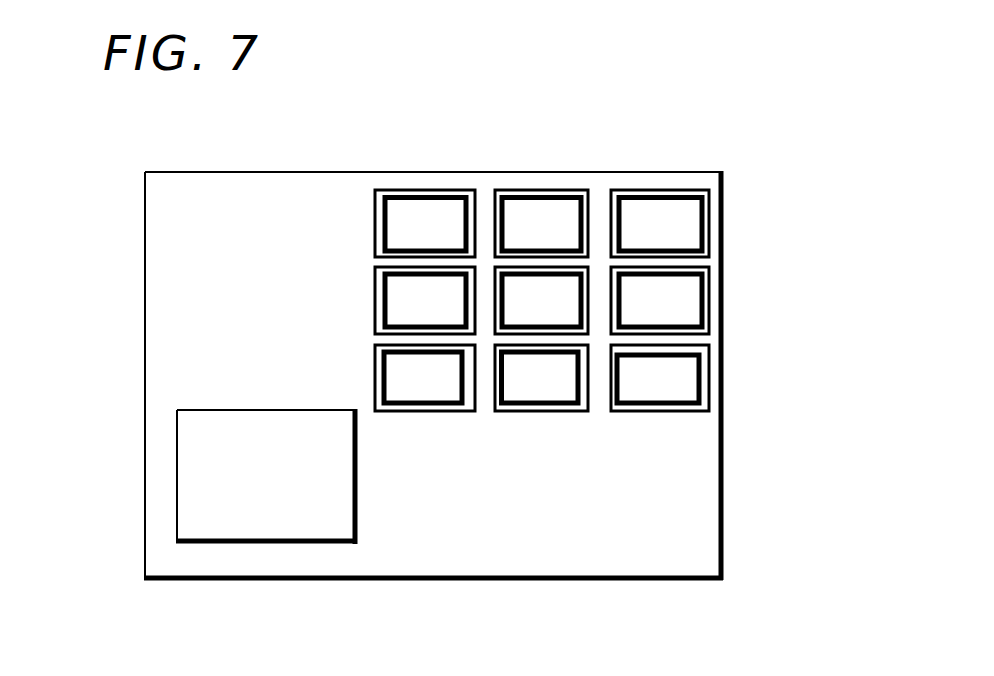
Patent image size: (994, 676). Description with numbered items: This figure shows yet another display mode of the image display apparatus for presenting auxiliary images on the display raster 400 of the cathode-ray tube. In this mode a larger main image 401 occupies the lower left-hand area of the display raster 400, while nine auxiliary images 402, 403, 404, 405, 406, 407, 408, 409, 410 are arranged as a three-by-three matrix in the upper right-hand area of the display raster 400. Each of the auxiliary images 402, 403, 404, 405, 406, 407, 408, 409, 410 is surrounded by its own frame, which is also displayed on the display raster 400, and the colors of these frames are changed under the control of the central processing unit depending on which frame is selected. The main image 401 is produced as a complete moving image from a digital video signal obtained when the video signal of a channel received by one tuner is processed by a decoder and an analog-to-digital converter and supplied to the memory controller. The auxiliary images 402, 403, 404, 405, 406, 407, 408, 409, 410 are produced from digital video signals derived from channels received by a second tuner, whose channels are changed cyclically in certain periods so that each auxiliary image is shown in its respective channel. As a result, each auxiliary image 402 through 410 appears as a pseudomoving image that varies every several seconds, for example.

The display raster 400 is at (660, 581).
The main image 401 is at (177, 468).
The auxiliary image 402 is at (420, 189).
The auxiliary image 403 is at (530, 189).
The auxiliary image 404 is at (660, 189).
The auxiliary image 405 is at (373, 282).
The auxiliary image 406 is at (592, 277).
The auxiliary image 407 is at (705, 307).
The auxiliary image 408 is at (432, 413).
The auxiliary image 409 is at (548, 413).
The auxiliary image 410 is at (705, 378).